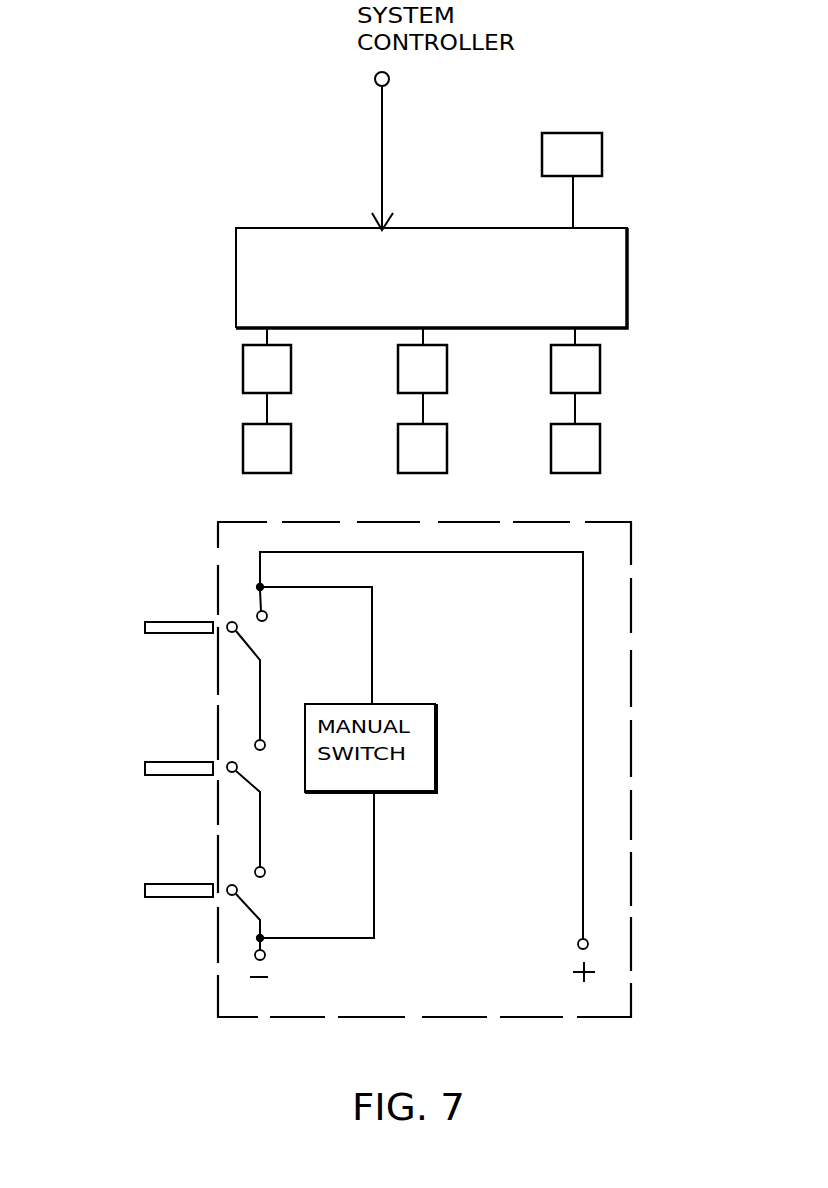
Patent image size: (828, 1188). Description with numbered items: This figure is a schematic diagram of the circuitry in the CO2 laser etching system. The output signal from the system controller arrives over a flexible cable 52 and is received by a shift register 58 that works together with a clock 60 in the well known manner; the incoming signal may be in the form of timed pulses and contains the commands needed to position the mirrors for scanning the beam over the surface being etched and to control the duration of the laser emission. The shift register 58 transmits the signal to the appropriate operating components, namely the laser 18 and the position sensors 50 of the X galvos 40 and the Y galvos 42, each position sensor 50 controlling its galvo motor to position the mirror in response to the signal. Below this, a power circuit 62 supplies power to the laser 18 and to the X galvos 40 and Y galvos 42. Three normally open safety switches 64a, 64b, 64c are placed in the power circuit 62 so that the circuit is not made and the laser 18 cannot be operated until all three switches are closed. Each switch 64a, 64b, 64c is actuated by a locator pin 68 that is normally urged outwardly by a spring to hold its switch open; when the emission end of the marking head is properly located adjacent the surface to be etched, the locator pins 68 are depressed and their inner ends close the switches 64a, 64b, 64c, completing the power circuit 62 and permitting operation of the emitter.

The flexible cable 52 is at (382, 163).
The clock 60 is at (602, 155).
The shift register 58 is at (400, 295).
The position sensor 50 is at (283, 385).
The laser 18 is at (279, 465).
The X galvos 40 is at (438, 465).
The Y galvos 42 is at (591, 465).
The power circuit 62 is at (633, 693).
The safety switch 64a is at (266, 620).
The safety switch 64b is at (263, 741).
The safety switch 64c is at (264, 868).
The locator pin 68 is at (158, 622).